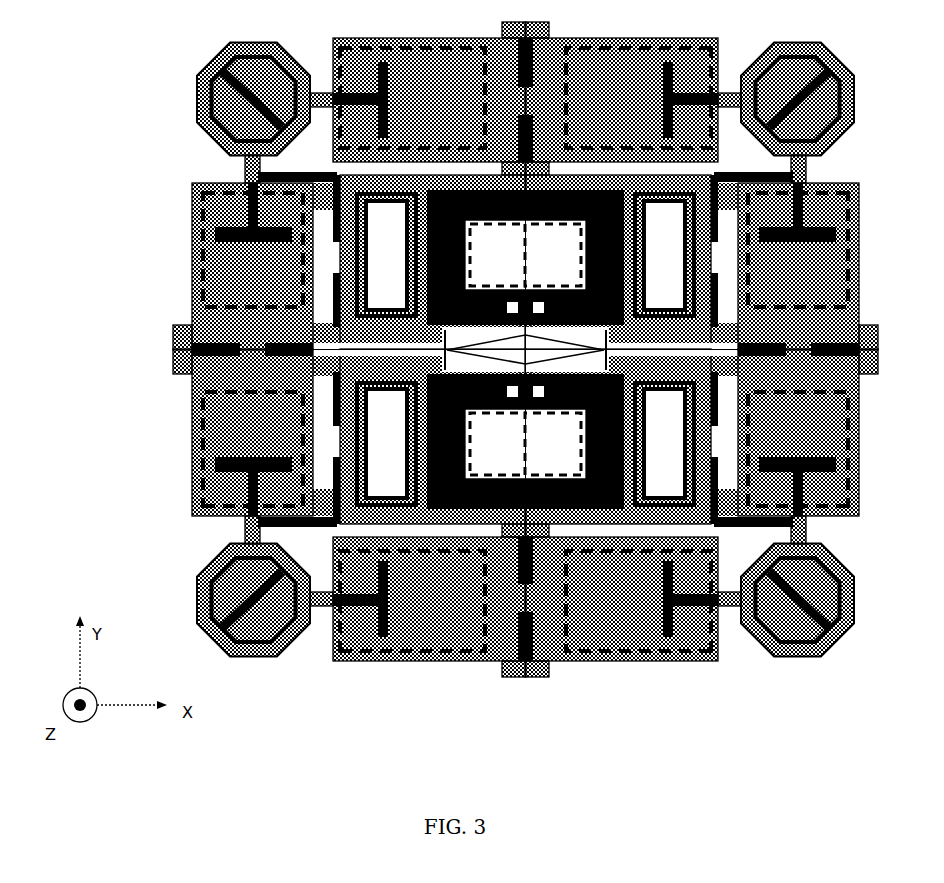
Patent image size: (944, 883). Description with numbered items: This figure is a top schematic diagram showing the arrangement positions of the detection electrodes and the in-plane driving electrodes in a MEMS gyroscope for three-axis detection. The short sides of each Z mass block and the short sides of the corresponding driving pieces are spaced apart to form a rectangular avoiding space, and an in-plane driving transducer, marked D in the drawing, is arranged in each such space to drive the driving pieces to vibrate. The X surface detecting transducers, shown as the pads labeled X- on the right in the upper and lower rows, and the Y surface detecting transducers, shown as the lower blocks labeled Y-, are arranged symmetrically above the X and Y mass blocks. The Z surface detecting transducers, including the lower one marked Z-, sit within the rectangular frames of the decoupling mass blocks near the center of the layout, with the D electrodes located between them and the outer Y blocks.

The X- electrode X- is at (689, 349).
The Y- electrode Y- is at (525, 438).
The Z- electrode Z- is at (525, 440).
The dummy electrode D is at (525, 349).